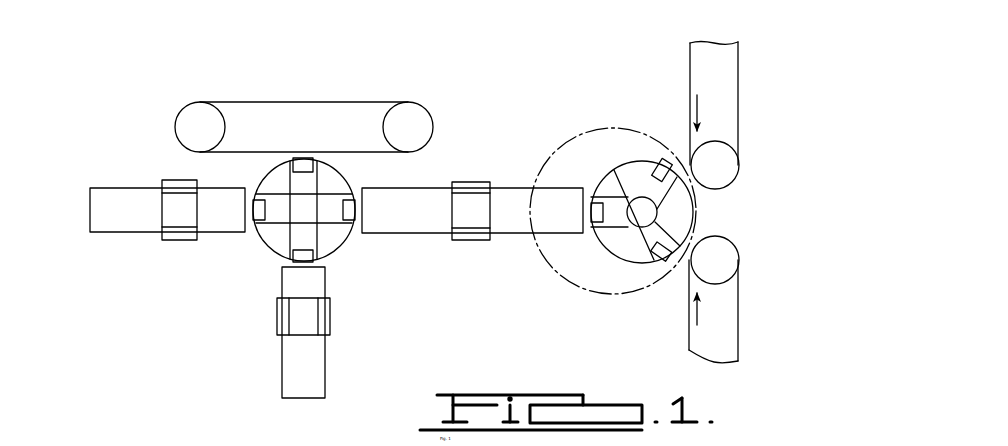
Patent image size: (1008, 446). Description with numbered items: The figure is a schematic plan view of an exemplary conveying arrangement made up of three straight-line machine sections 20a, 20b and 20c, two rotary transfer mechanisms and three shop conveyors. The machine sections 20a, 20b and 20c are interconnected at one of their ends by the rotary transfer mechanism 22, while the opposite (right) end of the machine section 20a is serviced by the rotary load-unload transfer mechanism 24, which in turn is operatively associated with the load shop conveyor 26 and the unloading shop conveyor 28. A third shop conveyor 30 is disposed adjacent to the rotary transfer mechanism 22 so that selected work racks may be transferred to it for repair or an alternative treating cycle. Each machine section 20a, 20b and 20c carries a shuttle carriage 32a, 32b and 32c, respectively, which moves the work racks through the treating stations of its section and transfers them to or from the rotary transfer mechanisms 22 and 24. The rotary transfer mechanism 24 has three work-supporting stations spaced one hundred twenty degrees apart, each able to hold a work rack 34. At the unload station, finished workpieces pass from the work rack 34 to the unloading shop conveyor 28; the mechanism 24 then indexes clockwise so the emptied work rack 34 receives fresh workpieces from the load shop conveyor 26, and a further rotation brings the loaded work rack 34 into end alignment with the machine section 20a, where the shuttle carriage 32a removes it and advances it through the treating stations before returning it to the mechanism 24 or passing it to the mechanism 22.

The straight-line machine section 20a is at (416, 186).
The straight-line machine section 20b is at (140, 234).
The straight-line machine section 20c is at (328, 376).
The rotary transfer mechanism 22 is at (269, 251).
The rotary load-unload transfer mechanism 24 is at (631, 268).
The load shop conveyor 26 is at (687, 334).
The unloading shop conveyor 28 is at (744, 95).
The third shop conveyor 30 is at (349, 99).
The shuttle carriage 32a is at (478, 182).
The shuttle carriage 32b is at (177, 181).
The shuttle carriage 32c is at (328, 315).
The work rack 34 is at (350, 224).